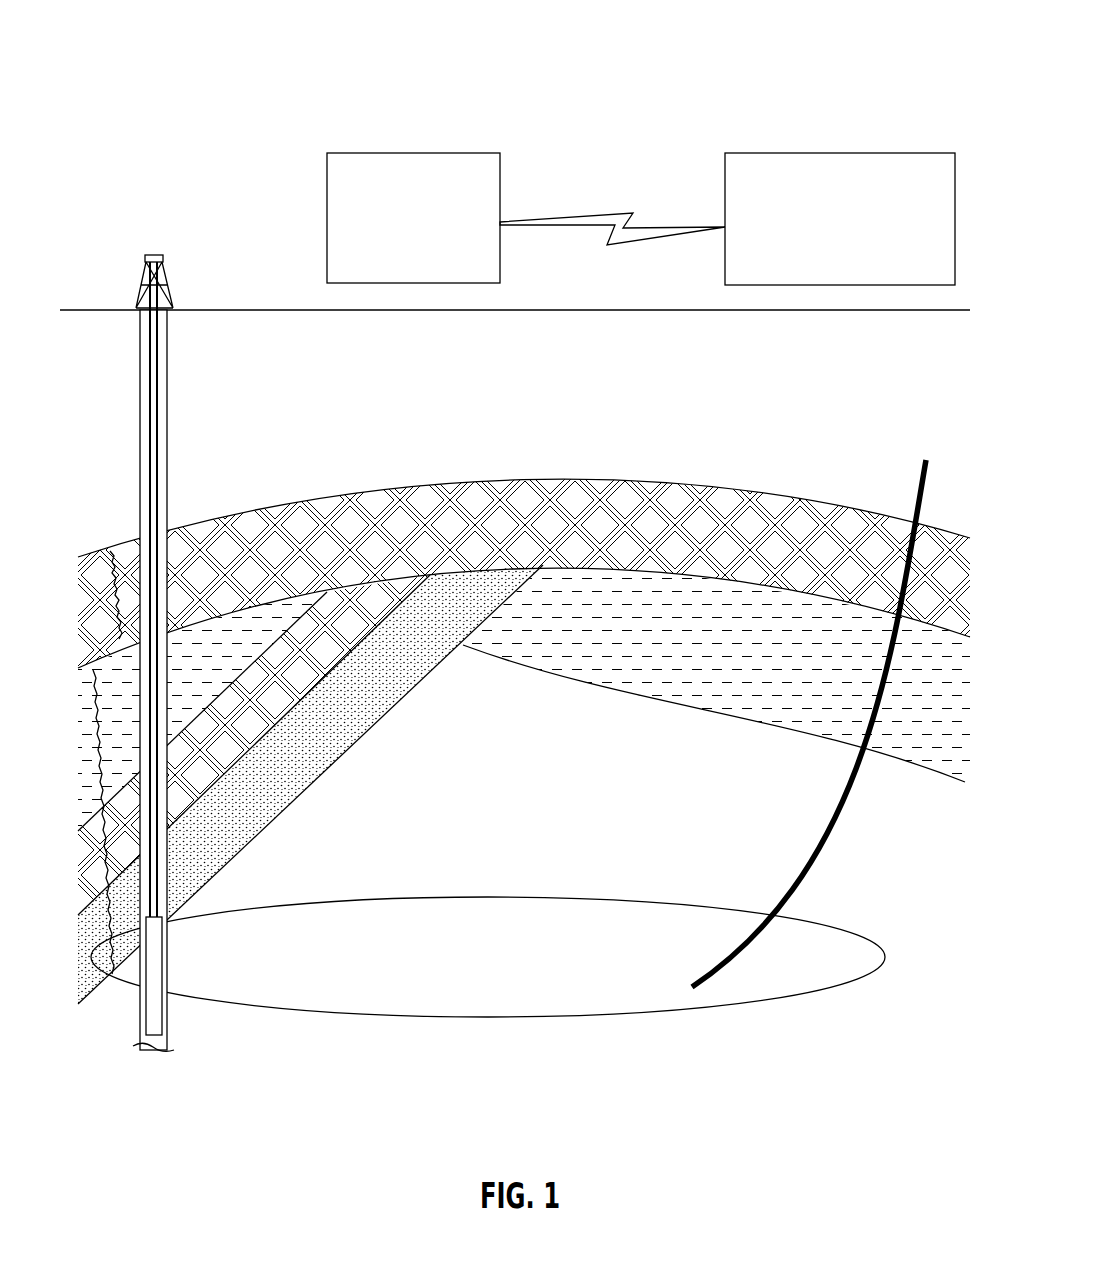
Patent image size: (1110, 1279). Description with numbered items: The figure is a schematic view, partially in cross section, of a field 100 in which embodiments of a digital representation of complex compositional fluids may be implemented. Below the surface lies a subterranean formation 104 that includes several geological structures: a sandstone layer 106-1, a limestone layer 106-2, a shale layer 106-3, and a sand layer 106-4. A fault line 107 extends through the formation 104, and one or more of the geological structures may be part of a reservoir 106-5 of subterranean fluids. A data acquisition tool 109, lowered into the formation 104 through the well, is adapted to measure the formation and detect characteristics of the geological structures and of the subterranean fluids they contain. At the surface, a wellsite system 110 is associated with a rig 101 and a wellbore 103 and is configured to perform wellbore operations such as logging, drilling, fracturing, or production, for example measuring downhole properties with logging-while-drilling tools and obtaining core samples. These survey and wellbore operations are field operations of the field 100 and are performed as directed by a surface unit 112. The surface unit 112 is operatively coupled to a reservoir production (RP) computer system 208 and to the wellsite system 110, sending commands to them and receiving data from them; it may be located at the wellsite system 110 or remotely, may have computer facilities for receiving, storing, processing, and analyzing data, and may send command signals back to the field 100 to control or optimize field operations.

The field 100 is at (710, 53).
The wellsite system 110 is at (169, 240).
The rig 101 is at (145, 283).
The wellbore 103 is at (168, 413).
The surface unit 112 is at (433, 244).
The reservoir production (RP) computer system 208 is at (860, 276).
The sandstone layer 106-1 is at (320, 566).
The limestone layer 106-2 is at (238, 672).
The shale layer 106-3 is at (314, 687).
The sand layer 106-4 is at (391, 711).
The reservoir 106-5 is at (503, 969).
The subterranean formation 104 is at (559, 807).
The fault line 107 is at (921, 484).
The data acquisition tool 109 is at (156, 1020).